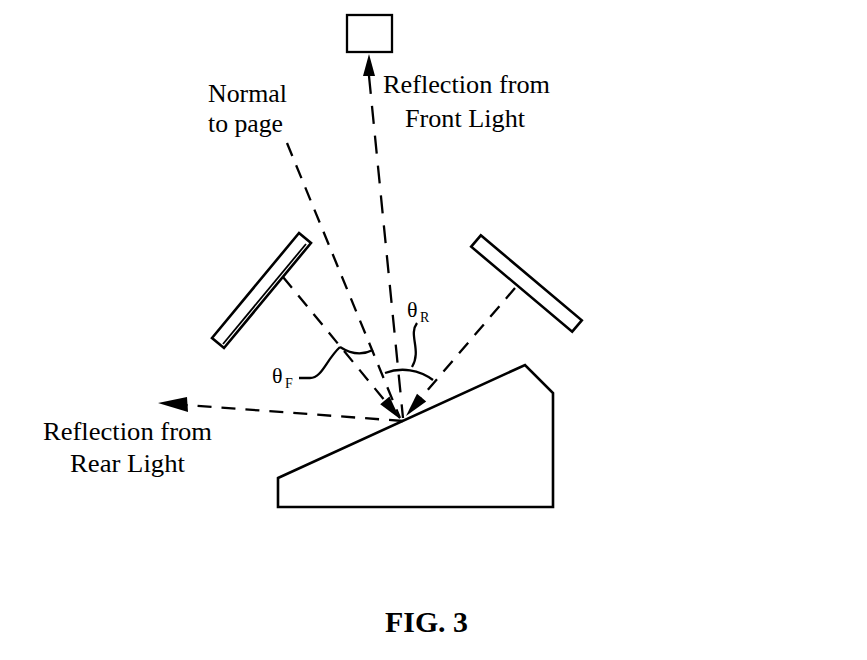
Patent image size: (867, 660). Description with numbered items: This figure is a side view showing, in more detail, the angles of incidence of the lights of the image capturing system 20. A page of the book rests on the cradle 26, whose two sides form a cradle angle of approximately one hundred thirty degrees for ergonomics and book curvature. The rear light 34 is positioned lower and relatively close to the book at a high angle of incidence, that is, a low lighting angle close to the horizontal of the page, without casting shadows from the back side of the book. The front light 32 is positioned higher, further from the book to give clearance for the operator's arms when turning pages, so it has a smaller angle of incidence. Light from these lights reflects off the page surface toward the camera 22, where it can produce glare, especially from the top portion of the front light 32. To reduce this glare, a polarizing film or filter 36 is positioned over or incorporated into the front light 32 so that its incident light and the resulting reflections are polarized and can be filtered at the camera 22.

The imaging system 20 is at (592, 206).
The camera 22 is at (356, 47).
The cradle 26 is at (472, 474).
The front light 32 is at (230, 310).
The rear light 34 is at (472, 236).
The polarizing film or filter 36 is at (272, 292).